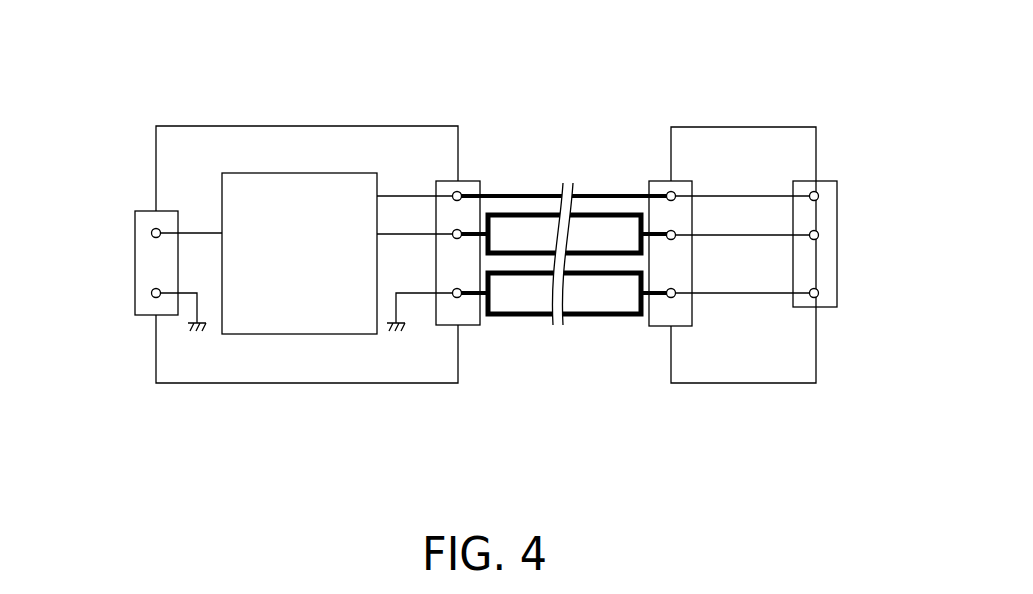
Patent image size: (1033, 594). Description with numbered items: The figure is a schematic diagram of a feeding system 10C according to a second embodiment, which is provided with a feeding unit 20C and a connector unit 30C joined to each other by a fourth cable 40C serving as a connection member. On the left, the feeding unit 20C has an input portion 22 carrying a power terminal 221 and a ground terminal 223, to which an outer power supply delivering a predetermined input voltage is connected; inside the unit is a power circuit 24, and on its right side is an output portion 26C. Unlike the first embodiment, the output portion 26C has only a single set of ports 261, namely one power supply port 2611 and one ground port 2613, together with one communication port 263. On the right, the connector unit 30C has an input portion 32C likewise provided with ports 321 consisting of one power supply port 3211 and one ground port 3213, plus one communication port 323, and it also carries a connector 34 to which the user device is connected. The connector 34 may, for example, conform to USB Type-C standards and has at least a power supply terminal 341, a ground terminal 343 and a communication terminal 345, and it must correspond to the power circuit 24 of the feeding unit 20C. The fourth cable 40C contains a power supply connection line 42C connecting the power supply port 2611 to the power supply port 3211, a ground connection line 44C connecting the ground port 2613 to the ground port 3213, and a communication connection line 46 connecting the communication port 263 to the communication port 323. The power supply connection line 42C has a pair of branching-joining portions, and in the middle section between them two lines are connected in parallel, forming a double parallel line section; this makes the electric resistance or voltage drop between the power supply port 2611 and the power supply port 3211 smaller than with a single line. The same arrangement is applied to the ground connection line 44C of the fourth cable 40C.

The feeding system 10C is at (514, 40).
The feeding unit 20C is at (296, 126).
The input portion 22 is at (148, 211).
The power terminal 221 is at (151, 233).
The ground terminal 223 is at (151, 293).
The power circuit 24 is at (297, 334).
The output portion 26C is at (458, 181).
The communication port 263 is at (465, 192).
The ports 261 is at (523, 420).
The power supply port 2611 is at (459, 239).
The ground port 2613 is at (455, 297).
The fourth cable 40C is at (564, 187).
The communication connection line 46 is at (513, 194).
The power supply connection line 42C is at (548, 215).
The ground connection line 44C is at (600, 273).
The connector unit 30C is at (785, 127).
The input portion 32C is at (688, 181).
The communication port 323 is at (665, 192).
The ports 321 is at (748, 420).
The power supply port 3211 is at (669, 240).
The ground port 3213 is at (673, 297).
The connector 34 is at (830, 178).
The communication terminal 345 is at (819, 196).
The power supply terminal 341 is at (819, 235).
The ground terminal 343 is at (819, 293).